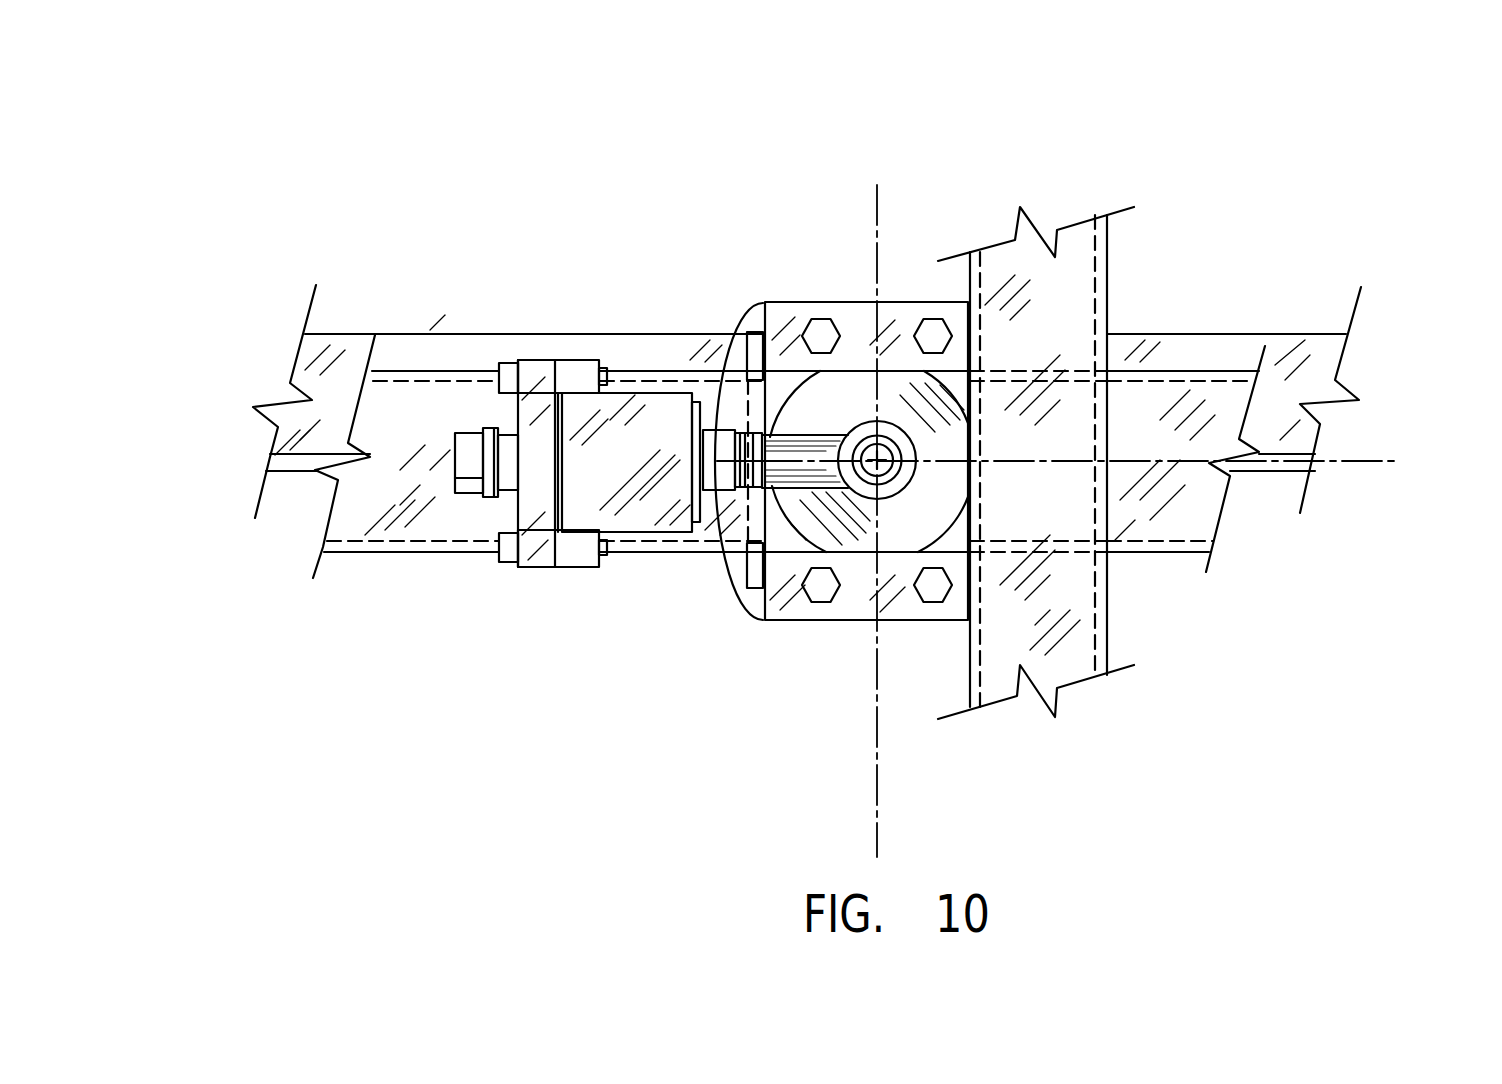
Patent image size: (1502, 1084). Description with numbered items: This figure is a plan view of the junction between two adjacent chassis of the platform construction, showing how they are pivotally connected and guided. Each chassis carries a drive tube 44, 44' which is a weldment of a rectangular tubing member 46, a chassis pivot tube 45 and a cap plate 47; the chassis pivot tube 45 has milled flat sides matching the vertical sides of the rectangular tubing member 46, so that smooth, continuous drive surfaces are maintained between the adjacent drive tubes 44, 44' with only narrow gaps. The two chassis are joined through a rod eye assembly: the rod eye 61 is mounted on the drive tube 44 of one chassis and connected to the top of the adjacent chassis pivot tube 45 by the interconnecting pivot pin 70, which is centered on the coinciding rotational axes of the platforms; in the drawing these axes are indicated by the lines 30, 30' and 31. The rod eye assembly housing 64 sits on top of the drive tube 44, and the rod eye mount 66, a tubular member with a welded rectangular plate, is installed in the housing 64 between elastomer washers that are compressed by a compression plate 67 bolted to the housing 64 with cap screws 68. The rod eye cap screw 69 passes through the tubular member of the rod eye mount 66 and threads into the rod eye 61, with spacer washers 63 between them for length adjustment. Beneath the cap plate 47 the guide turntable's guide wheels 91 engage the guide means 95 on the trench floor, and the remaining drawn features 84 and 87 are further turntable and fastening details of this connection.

The vertical axis / section line 30 is at (916, 521).
The vertical axis / section line 30' is at (922, 826).
The horizontal axis line 31 is at (1088, 421).
The drive tube 44 is at (509, 541).
The drive tube 44' is at (1208, 570).
The chassis pivot tube 45 is at (866, 333).
The rectangular tubing member 46 is at (713, 565).
The cap plate 47 is at (811, 548).
The rod eye 61 is at (784, 301).
The spacer washers 63 is at (697, 302).
The rod eye assembly housing 64 is at (620, 323).
The rod eye mount 66 is at (399, 305).
The compression plate 67 is at (528, 340).
The cap screws 68 is at (442, 338).
The rod eye cap screw 69 is at (335, 303).
The pivot pin 70 is at (858, 306).
The spacer bracket 84 is at (724, 619).
The hex bolt 87 is at (845, 557).
The guide wheels 91 is at (622, 550).
The guide means 95 is at (1294, 393).